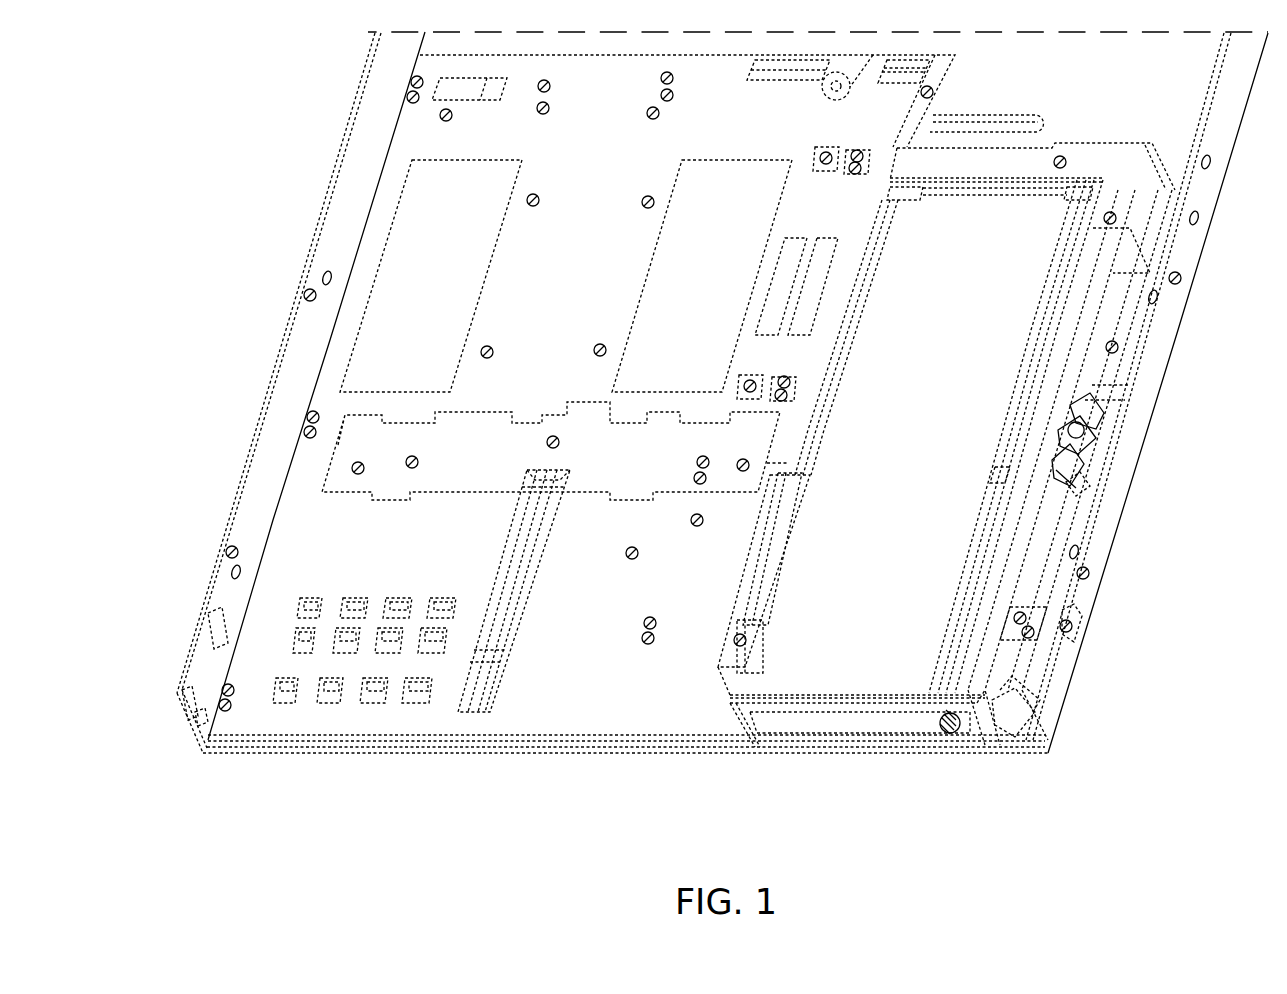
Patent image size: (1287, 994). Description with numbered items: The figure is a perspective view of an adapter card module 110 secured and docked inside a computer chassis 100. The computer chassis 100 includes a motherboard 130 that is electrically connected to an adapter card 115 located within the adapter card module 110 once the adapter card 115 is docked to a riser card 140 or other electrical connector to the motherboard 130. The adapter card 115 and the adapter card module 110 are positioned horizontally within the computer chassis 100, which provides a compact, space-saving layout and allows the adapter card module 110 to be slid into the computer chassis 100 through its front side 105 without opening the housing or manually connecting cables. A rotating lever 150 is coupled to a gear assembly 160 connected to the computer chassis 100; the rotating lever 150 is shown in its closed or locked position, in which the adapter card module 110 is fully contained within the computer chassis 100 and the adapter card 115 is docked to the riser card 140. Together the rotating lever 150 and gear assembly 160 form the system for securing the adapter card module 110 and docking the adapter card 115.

The computer chassis 100 is at (227, 143).
The front side 105 is at (450, 770).
The adapter card module 110 is at (985, 360).
The adapter card 115 is at (840, 638).
The motherboard 130 is at (305, 555).
The riser card 140 is at (735, 598).
The rotating lever 150 is at (878, 725).
The gear assembly 160 is at (1077, 487).